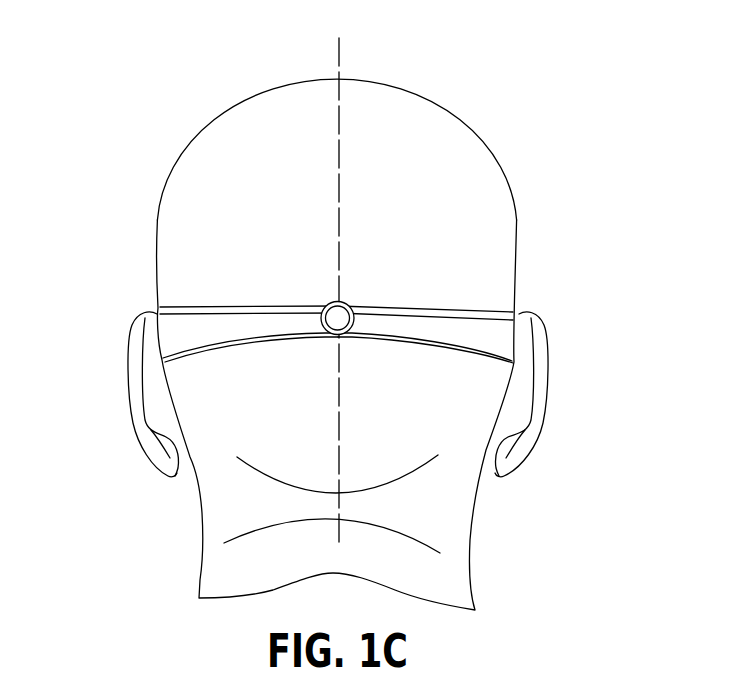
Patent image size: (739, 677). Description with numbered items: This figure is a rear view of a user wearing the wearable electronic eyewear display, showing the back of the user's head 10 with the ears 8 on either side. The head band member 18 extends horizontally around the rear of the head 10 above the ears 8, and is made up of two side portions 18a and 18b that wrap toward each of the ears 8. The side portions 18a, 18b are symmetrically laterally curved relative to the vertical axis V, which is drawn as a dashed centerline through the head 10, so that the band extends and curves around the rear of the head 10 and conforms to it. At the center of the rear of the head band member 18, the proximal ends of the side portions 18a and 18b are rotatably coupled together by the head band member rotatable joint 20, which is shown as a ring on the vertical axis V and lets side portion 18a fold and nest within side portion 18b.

The vertical axis V is at (338, 57).
The user's head 10 is at (438, 152).
The ears 8 is at (128, 362).
The head band member 18 is at (336, 297).
The side portion 18a is at (431, 313).
The side portion 18b is at (243, 317).
The head band member rotatable joint 20 is at (340, 329).